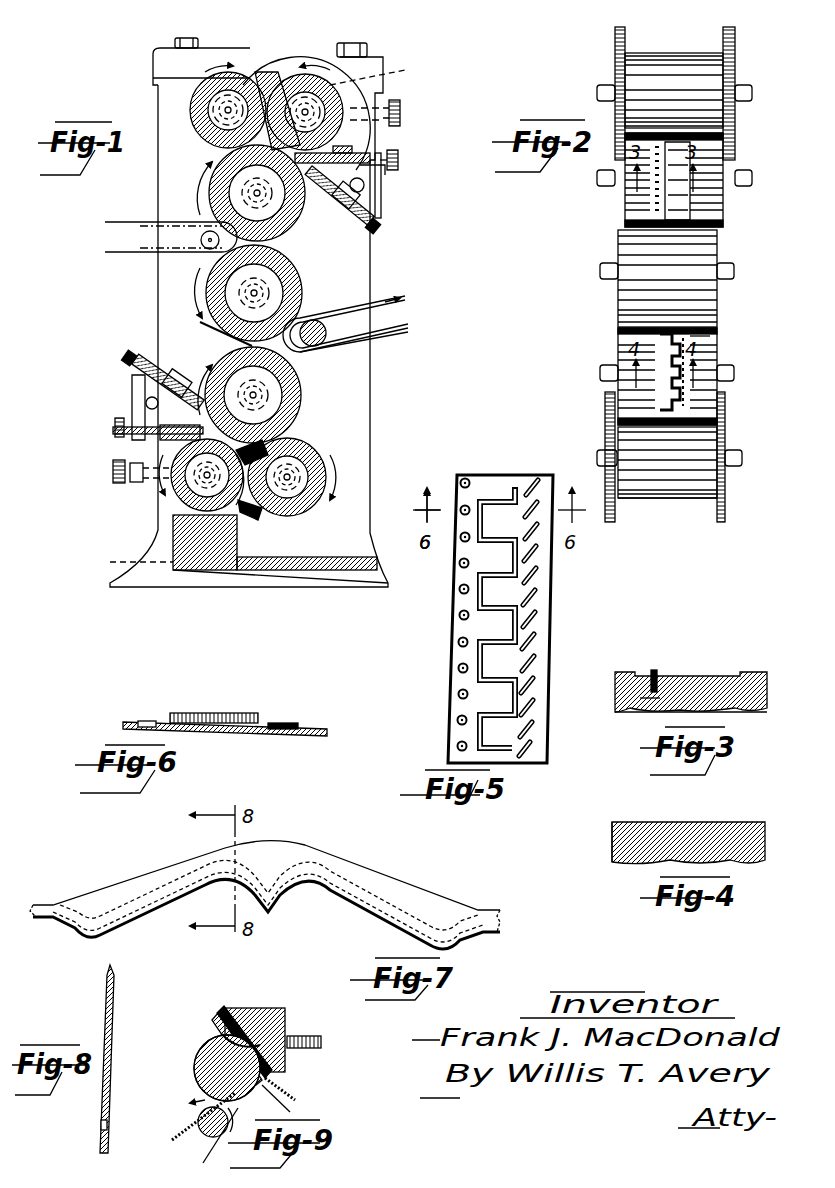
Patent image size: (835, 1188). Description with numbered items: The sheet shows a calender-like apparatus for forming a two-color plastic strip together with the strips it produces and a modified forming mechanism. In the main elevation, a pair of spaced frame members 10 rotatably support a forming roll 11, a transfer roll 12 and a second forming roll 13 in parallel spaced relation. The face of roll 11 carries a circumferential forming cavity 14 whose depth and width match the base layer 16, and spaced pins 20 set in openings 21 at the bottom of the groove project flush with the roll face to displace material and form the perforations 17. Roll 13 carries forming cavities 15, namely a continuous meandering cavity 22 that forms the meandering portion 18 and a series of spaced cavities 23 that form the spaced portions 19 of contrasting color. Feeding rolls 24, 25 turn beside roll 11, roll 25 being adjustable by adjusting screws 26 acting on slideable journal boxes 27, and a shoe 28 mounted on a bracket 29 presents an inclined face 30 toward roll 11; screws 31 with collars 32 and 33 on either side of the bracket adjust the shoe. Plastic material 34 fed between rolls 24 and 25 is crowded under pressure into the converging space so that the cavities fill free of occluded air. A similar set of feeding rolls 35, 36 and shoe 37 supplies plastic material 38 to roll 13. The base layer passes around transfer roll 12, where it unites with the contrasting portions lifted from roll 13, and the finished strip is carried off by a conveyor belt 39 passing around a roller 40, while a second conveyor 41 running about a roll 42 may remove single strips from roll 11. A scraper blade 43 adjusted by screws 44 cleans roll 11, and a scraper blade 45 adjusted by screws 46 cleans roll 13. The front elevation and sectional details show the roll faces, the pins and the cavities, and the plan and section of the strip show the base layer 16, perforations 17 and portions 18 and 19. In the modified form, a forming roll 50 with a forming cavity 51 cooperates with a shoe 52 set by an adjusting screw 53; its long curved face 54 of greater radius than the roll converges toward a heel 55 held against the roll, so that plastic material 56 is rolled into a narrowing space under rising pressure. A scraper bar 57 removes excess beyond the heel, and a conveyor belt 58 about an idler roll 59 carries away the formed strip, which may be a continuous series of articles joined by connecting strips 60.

In FIG. 1, the frame members 10 is at (372, 385).
In FIG. 1, the forming roll 11 is at (290, 228).
In FIG. 2, the forming roll 11 is at (663, 190).
In FIG. 3, the forming roll 11 is at (622, 712).
In FIG. 1, the transfer roll 12 is at (302, 287).
In FIG. 2, the transfer roll 12 is at (622, 305).
In FIG. 1, the second forming roll 13 is at (300, 378).
In FIG. 2, the second forming roll 13 is at (666, 376).
In FIG. 4, the second forming roll 13 is at (622, 822).
In FIG. 2, the forming cavity (circumferential groove) 14 is at (690, 190).
In FIG. 3, the forming cavity (circumferential groove) 14 is at (720, 672).
In FIG. 2, the forming cavities 15 is at (692, 342).
In FIG. 4, the forming cavities 15 is at (715, 822).
In FIG. 1, the base layer 16 is at (200, 320).
In FIG. 5, the base layer 16 is at (548, 657).
In FIG. 6, the base layer 16 is at (328, 733).
In FIG. 5, the perforations 17 is at (462, 620).
In FIG. 6, the perforations 17 is at (148, 724).
In FIG. 1, the meandering strip portion 18 is at (370, 338).
In FIG. 5, the meandering strip portion 18 is at (478, 655).
In FIG. 6, the meandering strip portion 18 is at (182, 716).
In FIG. 5, the spaced portions 19 is at (533, 622).
In FIG. 6, the spaced portions 19 is at (285, 724).
In FIG. 2, the pins 20 is at (640, 212).
In FIG. 3, the pins 20 is at (656, 670).
In FIG. 3, the openings 21 is at (640, 698).
In FIG. 2, the meandering cavity 22 is at (645, 397).
In FIG. 2, the spaced cavities 23 is at (700, 405).
In FIG. 1, the feeding roll 24 is at (190, 104).
In FIG. 1, the feeding roll 25 is at (318, 95).
In FIG. 2, the feeding roll 25 is at (645, 62).
In FIG. 1, the adjusting screws 26 is at (395, 100).
In FIG. 1, the journal boxes 27 is at (380, 72).
In FIG. 1, the shoe 28 is at (380, 150).
In FIG. 1, the bracket 29 is at (381, 195).
In FIG. 1, the inclined face 30 is at (362, 190).
In FIG. 1, the screws 31 is at (398, 162).
In FIG. 1, the collar 32 is at (372, 158).
In FIG. 1, the collar 33 is at (386, 176).
In FIG. 1, the plastic material (bank) 34 is at (266, 72).
In FIG. 1, the feeding roll 35 is at (180, 505).
In FIG. 2, the feeding roll 35 is at (722, 493).
In FIG. 1, the feeding roll 36 is at (300, 445).
In FIG. 2, the feeding roll 36 is at (682, 495).
In FIG. 1, the shoe 37 is at (146, 402).
In FIG. 1, the plastic material 38 is at (268, 512).
In FIG. 1, the conveyor belt 39 is at (380, 295).
In FIG. 1, the roller 40 is at (352, 314).
In FIG. 1, the second conveyor 41 is at (128, 248).
In FIG. 1, the roll 42 is at (203, 246).
In FIG. 1, the scraper blade 43 is at (362, 215).
In FIG. 1, the adjusting screws 44 is at (380, 228).
In FIG. 1, the scraper blade 45 is at (176, 385).
In FIG. 1, the screws 46 is at (125, 355).
In FIG. 9, the forming roll 50 is at (218, 1030).
In FIG. 9, the forming cavity (groove) 51 is at (205, 1048).
In FIG. 9, the shoe 52 is at (282, 1012).
In FIG. 9, the adjusting screw 53 is at (318, 1037).
In FIG. 9, the curved face 54 is at (230, 1012).
In FIG. 9, the heel 55 is at (280, 1088).
In FIG. 9, the plastic material 56 is at (212, 1018).
In FIG. 9, the scraper bar 57 is at (292, 1100).
In FIG. 9, the conveyor belt 58 is at (200, 1150).
In FIG. 9, the idler roll 59 is at (200, 1120).
In FIG. 7, the connecting strips 60 is at (38, 905).